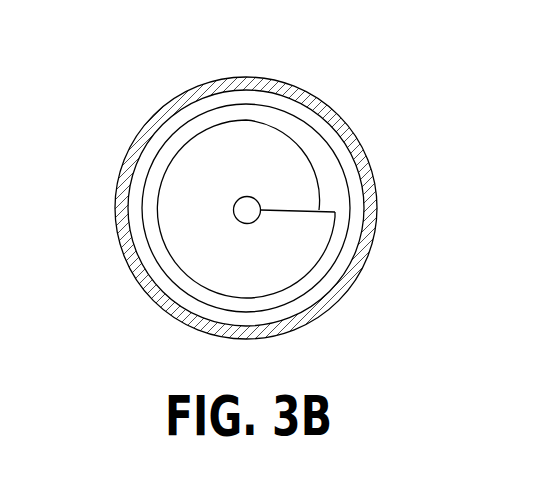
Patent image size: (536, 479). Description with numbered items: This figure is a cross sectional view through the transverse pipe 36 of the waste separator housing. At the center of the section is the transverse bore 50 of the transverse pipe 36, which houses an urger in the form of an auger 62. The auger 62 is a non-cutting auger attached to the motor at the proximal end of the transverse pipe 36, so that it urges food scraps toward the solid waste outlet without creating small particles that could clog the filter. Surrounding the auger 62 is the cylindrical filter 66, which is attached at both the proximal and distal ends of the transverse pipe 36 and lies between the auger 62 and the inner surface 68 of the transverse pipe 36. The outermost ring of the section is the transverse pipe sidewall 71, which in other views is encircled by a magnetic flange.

The transverse pipe 36 is at (361, 143).
The transverse bore 50 is at (335, 197).
The auger 62 is at (187, 165).
The cylindrical filter 66 is at (247, 103).
The inner surface 68 is at (317, 110).
The transverse pipe sidewall 71 is at (363, 262).